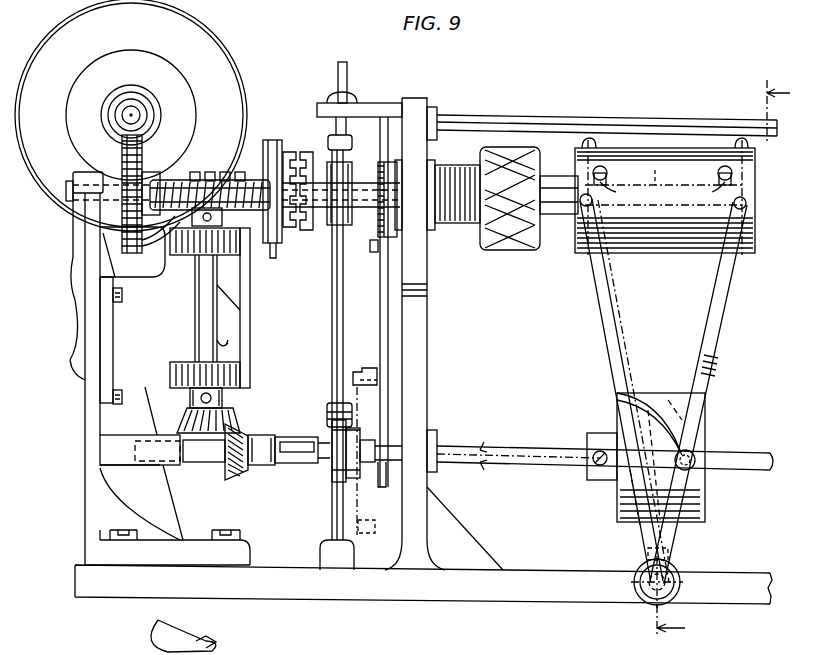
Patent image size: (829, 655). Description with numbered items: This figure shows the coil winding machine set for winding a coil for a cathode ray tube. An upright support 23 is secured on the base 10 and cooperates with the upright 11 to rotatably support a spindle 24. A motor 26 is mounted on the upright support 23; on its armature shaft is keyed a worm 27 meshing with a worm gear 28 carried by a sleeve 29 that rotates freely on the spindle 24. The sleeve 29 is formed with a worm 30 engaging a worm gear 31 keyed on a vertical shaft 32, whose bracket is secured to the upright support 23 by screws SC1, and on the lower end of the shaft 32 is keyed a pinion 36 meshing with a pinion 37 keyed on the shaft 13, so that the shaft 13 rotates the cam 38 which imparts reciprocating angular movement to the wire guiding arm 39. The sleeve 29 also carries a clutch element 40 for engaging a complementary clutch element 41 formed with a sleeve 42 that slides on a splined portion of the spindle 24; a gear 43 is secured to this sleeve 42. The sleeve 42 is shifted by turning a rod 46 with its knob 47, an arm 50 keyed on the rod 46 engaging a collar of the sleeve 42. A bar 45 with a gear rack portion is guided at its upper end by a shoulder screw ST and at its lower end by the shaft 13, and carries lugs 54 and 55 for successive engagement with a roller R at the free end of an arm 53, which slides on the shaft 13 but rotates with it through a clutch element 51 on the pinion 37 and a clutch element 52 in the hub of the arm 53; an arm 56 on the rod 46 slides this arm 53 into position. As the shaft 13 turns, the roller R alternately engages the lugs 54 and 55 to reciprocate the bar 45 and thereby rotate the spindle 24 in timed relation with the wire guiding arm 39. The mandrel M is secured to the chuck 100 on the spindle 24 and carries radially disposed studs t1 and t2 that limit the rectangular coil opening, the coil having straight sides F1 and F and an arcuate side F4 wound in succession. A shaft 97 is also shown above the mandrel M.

The base 10 is at (76, 587).
The upright 11 is at (420, 408).
The shaft 13 is at (542, 466).
The upright support 23 is at (82, 485).
The spindle 24 is at (365, 180).
The motor 26 is at (224, 50).
The worm 27 is at (155, 110).
The worm gear 28 is at (142, 165).
The sleeve 29 is at (262, 148).
The worm 30 is at (210, 178).
The worm gear 31 is at (196, 174).
The shaft 32 is at (195, 297).
The pinion 36 is at (224, 402).
The pinion 37 is at (240, 472).
The cam 38 is at (618, 522).
The wire guiding arm 39 is at (718, 333).
The clutch element 40 is at (290, 150).
The clutch element 41 is at (311, 150).
The sleeve 42 is at (323, 225).
The gear 43 is at (378, 228).
The bar 45 is at (379, 322).
The rod 46 is at (331, 325).
The knob 47 is at (348, 84).
The arm 50 is at (352, 145).
The clutch element 51 is at (256, 436).
The clutch element 52 is at (300, 436).
The arm 53 is at (345, 485).
The lug 54 is at (372, 470).
The lug 55 is at (372, 368).
The arm 56 is at (327, 408).
The shaft 97 is at (653, 118).
The chuck 100 is at (566, 175).
The mandrel M is at (667, 252).
The roller R is at (372, 438).
The shoulder screw ST is at (370, 250).
The screws SC1 is at (118, 390).
The straight side F1 is at (612, 175).
The straight sides F is at (656, 172).
The arcuate side F4 is at (712, 175).
The stud t1 is at (712, 191).
The stud t2 is at (614, 191).